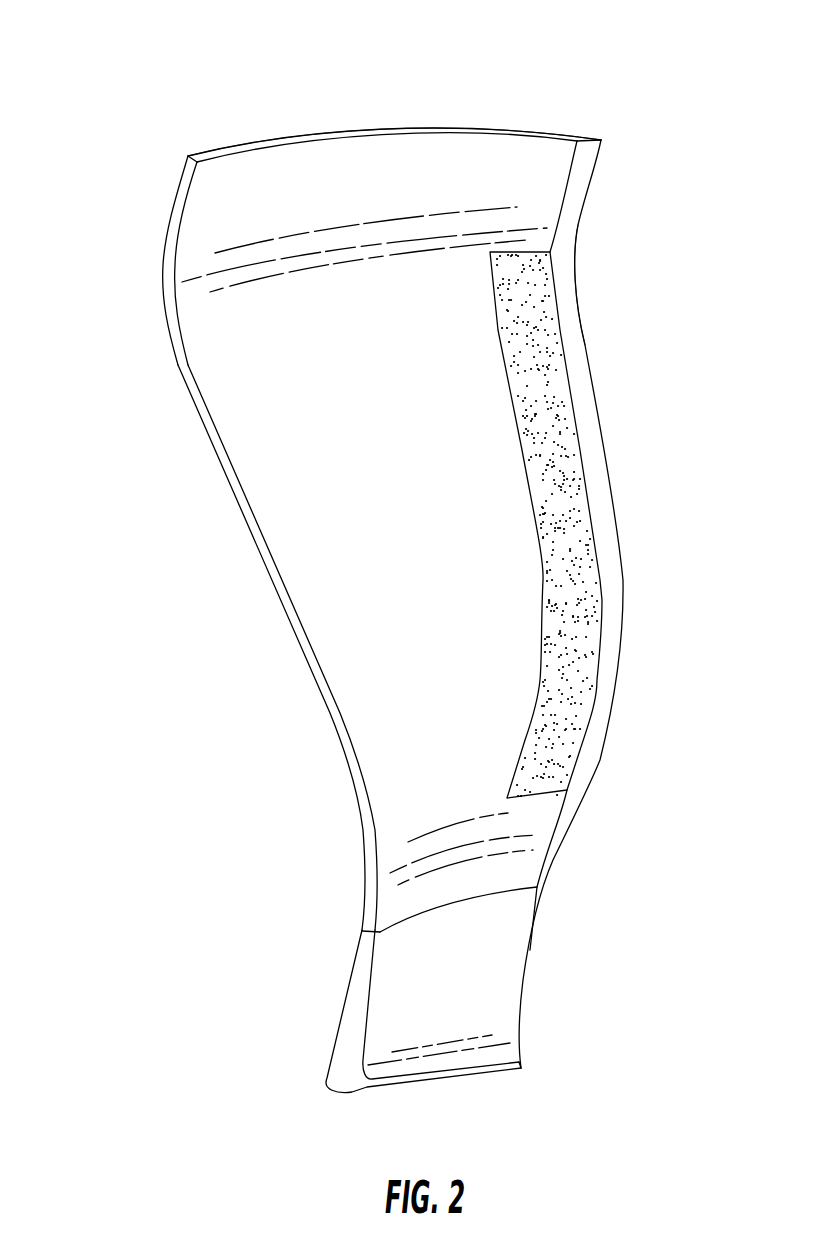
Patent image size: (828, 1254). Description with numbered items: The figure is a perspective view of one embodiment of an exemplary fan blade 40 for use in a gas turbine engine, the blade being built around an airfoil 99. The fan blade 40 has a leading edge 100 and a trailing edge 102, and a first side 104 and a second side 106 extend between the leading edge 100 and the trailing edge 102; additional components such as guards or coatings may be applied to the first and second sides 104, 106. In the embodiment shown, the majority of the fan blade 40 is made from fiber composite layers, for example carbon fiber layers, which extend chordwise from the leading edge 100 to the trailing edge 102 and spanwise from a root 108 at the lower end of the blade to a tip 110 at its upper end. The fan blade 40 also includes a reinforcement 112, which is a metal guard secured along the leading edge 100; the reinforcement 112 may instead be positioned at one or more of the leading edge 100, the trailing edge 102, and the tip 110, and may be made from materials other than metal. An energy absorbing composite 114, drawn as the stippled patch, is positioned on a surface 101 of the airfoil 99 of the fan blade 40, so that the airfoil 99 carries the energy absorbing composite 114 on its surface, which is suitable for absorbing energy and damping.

The fan blade 40 is at (337, 101).
The airfoil 99 is at (258, 630).
The leading edge 100 is at (572, 273).
The surface of the airfoil 101 is at (393, 285).
The trailing edge 102 is at (163, 265).
The first side 104 is at (522, 178).
The second side 106 is at (228, 481).
The root 108 is at (473, 1075).
The tip 110 is at (250, 147).
The reinforcement 112 is at (574, 180).
The energy absorbing composite 114 is at (523, 398).